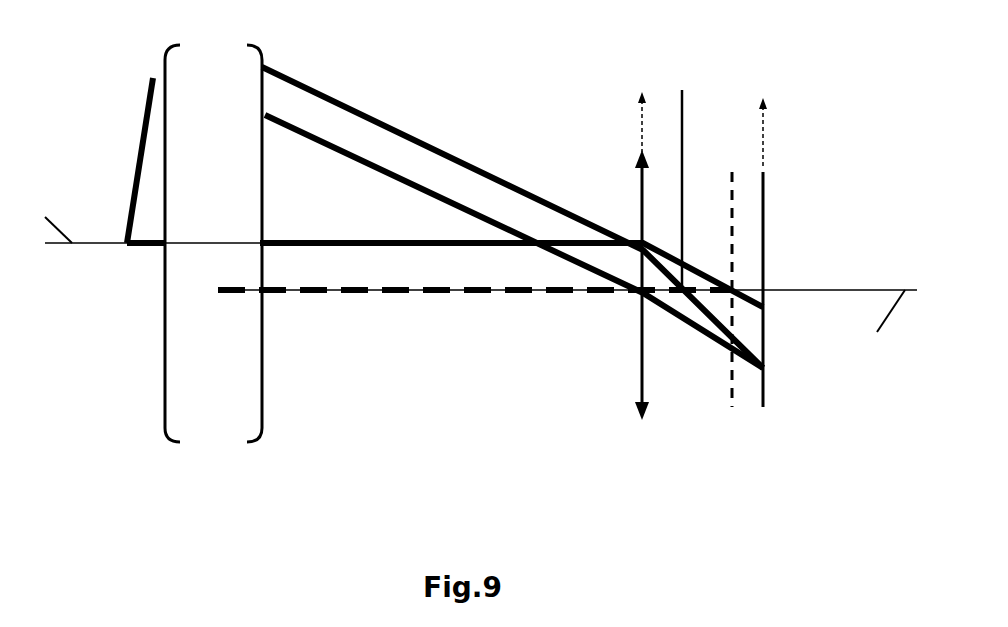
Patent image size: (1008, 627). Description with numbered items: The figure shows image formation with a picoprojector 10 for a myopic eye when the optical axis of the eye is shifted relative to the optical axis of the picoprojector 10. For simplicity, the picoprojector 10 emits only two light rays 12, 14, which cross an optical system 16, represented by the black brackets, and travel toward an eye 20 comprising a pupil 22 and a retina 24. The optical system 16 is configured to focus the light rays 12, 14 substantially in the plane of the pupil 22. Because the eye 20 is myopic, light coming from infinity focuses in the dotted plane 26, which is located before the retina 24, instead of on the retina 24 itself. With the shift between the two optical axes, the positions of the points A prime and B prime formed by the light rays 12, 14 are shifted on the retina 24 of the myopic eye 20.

The picoprojector 10 is at (114, 260).
The light ray 12 is at (358, 380).
The light ray 14 is at (140, 128).
The optical system 16 is at (155, 455).
The eye 20 is at (773, 462).
The pupil 22 is at (631, 377).
The retina 24 is at (770, 414).
The dotted plane 26 is at (739, 160).